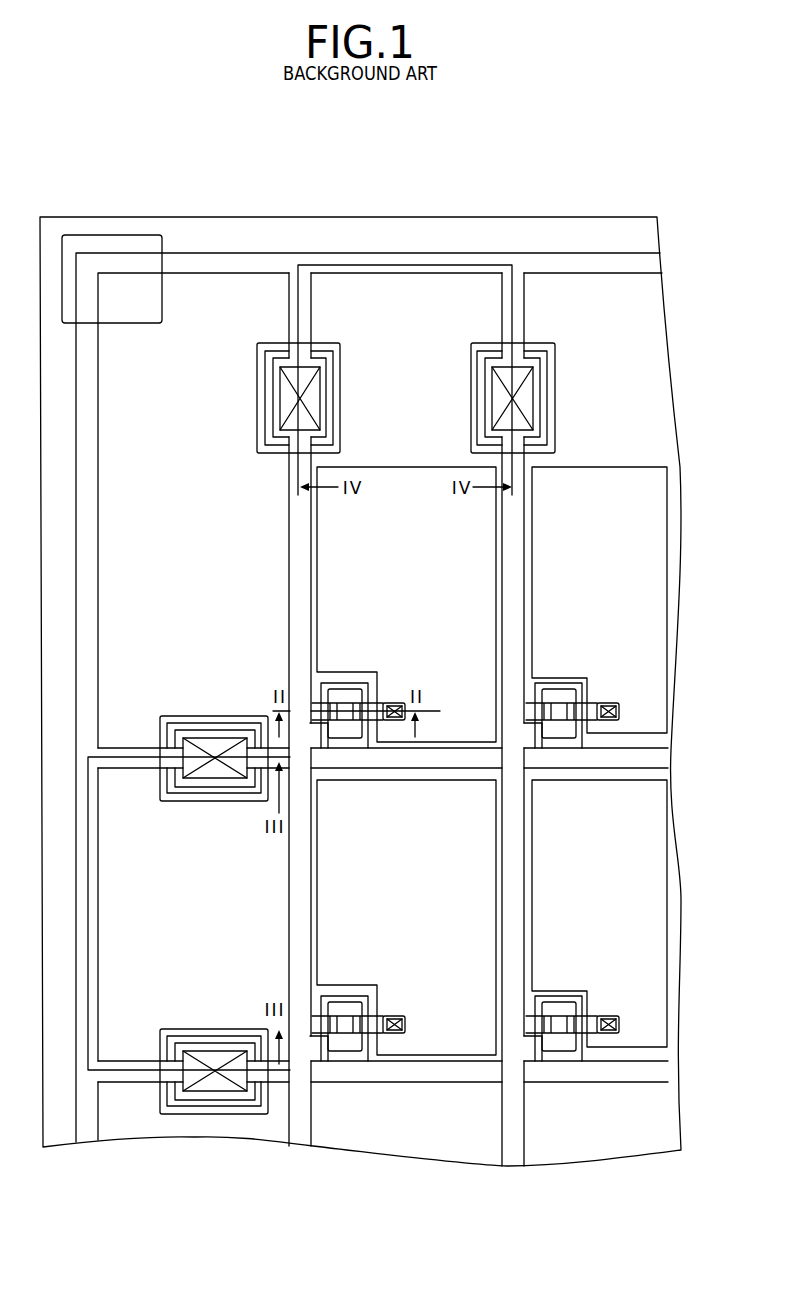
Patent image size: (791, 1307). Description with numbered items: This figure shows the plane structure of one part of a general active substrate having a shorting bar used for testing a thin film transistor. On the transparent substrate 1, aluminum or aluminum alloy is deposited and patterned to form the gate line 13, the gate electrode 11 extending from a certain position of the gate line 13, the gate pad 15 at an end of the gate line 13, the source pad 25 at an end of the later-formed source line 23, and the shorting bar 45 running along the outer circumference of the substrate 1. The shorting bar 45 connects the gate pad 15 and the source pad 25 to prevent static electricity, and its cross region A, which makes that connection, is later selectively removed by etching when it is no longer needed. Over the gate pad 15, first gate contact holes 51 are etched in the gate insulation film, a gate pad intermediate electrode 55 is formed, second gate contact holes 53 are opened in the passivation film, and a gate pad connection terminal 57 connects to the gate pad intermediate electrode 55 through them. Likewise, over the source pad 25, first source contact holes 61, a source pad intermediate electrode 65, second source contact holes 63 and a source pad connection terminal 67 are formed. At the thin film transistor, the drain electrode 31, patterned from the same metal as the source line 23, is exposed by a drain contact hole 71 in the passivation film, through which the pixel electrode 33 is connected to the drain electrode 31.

The transparent substrate 1 is at (522, 232).
The cross region A is at (110, 236).
The shorting bar 45 is at (248, 260).
The source line 23 is at (292, 547).
The source pad 25 is at (328, 375).
The first source contact hole 61 is at (253, 397).
The second source contact hole 63 is at (277, 385).
The source pad intermediate electrode 65 is at (547, 360).
The source pad connection terminal 67 is at (555, 400).
The pixel electrode 33 is at (410, 482).
The gate line 13 is at (473, 755).
The gate electrode 11 is at (340, 693).
The drain contact hole 71 is at (601, 704).
The drain electrode 31 is at (342, 990).
The gate pad intermediate electrode 55 is at (182, 720).
The gate pad connection terminal 57 is at (230, 717).
The first gate contact hole 51 is at (215, 790).
The second gate contact hole 53 is at (212, 780).
The gate pad 15 is at (225, 1030).